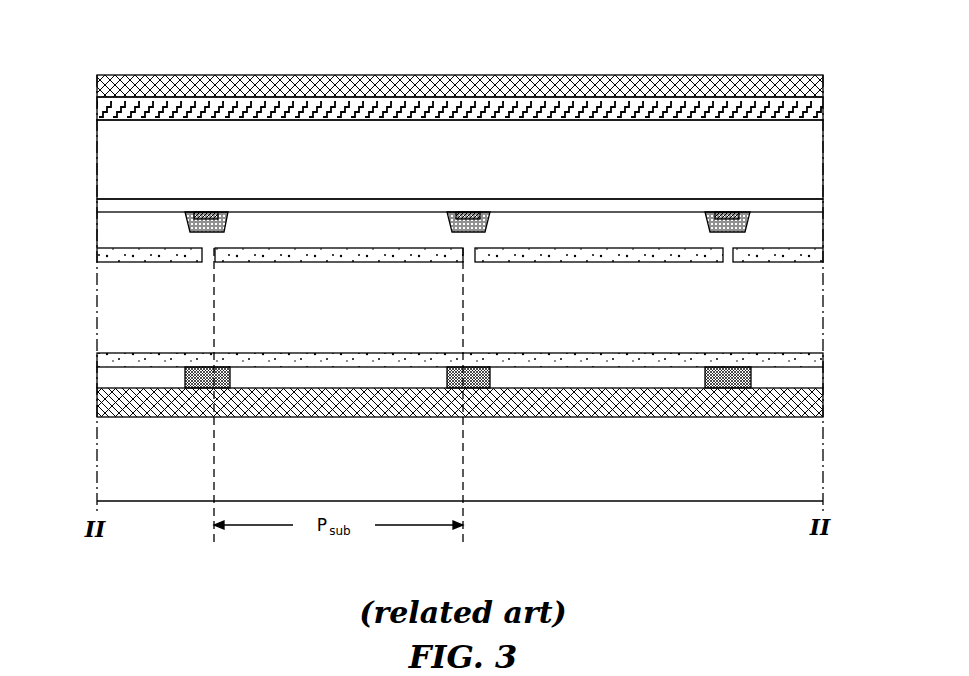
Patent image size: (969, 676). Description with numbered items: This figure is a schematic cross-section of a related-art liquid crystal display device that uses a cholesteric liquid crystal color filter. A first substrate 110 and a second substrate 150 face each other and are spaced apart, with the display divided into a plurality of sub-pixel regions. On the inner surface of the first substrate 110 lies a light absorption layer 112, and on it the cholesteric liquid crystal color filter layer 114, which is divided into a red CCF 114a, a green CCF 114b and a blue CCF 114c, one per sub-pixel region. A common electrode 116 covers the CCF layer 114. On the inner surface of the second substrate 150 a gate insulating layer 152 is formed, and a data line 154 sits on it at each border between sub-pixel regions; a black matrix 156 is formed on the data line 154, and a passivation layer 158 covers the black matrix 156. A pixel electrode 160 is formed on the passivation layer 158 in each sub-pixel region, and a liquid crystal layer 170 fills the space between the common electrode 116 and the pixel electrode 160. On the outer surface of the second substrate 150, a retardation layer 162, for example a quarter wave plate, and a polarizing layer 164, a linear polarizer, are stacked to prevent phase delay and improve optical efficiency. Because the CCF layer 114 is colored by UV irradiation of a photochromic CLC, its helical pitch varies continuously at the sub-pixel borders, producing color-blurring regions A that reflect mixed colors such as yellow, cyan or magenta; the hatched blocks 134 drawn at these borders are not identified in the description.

The first substrate 110 is at (792, 472).
The light absorption layer 112 is at (110, 407).
The cholesteric liquid crystal color filter layer 114 is at (96, 367).
The red CCF 114a is at (140, 383).
The green CCF 114b is at (345, 383).
The blue CCF 114c is at (583, 383).
The common electrode 116 is at (277, 362).
The thin film transistor region 134 is at (461, 422).
The second substrate 150 is at (798, 162).
The gate insulating layer 152 is at (293, 207).
The data line 154 is at (205, 213).
The black matrix 156 is at (225, 213).
The passivation layer 158 is at (115, 229).
The pixel electrode 160 is at (152, 261).
The retardation layer 162 is at (246, 108).
The polarizing layer 164 is at (177, 77).
The liquid crystal layer 170 is at (798, 313).
The color-blurring region A is at (200, 389).